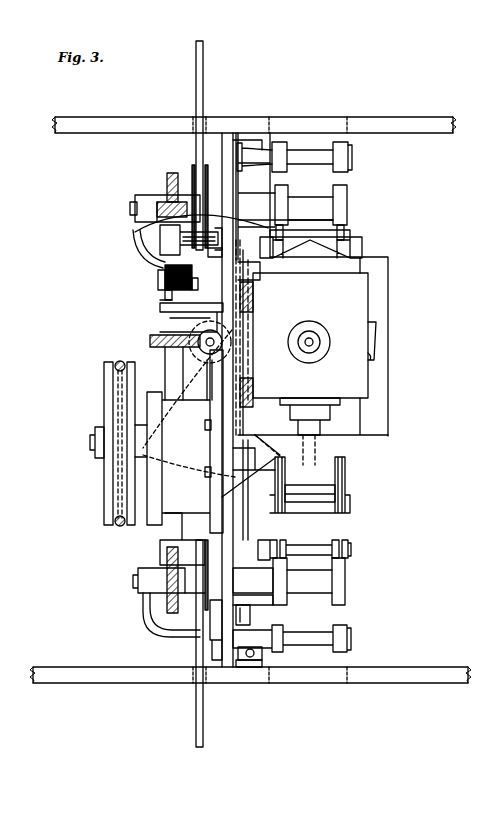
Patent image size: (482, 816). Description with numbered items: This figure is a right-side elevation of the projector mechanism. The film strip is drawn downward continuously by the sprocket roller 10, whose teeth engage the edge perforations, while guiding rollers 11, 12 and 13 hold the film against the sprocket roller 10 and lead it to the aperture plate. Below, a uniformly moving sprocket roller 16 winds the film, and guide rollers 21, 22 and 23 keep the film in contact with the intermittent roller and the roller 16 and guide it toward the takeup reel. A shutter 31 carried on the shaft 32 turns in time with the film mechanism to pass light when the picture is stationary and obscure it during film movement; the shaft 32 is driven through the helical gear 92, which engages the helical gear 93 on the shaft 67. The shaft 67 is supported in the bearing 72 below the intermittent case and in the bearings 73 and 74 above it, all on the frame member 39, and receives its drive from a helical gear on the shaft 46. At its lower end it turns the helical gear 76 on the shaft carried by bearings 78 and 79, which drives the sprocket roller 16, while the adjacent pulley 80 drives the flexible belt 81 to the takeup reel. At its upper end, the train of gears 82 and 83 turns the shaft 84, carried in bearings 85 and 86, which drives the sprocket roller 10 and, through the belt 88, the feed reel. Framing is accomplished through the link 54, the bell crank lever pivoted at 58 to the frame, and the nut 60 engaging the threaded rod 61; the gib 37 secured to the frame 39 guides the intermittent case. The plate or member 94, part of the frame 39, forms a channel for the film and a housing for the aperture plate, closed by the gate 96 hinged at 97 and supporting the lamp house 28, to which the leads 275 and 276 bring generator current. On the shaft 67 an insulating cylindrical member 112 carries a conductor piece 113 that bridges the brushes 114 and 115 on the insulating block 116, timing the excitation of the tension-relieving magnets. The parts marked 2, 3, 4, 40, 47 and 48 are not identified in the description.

The upper plate 2 is at (318, 76).
The lower plate 3 is at (250, 706).
The drive unit 4 is at (413, 493).
The sprocket roller 10 is at (345, 202).
The guiding roller 11 is at (350, 151).
The guiding roller 12 is at (350, 229).
The guiding roller 13 is at (352, 249).
The uniformly moving sprocket roller 16 is at (340, 587).
The guide roller 21 is at (312, 514).
The guide roller 22 is at (298, 549).
The guide roller 23 is at (298, 635).
The lamp house 28 is at (352, 305).
The shutter 31 is at (133, 238).
The shaft 32 is at (237, 339).
The gib 37 is at (213, 457).
The machine frame 39 is at (225, 496).
The upper tab 40 is at (205, 428).
The shaft 46 is at (90, 444).
The wheel 47 is at (104, 499).
The rim pins 48 is at (120, 526).
The link 54 is at (250, 533).
The pivot 58 is at (250, 622).
The block or nut 60 is at (262, 656).
The rod 61 is at (250, 664).
The shaft 67 is at (172, 369).
The bearing 72 is at (160, 546).
The bearing 73 is at (160, 324).
The bearing 74 is at (165, 241).
The helical gear 76 is at (165, 561).
The bearing 78 is at (140, 601).
The bearing 79 is at (253, 586).
The pulley 80 is at (190, 613).
The flexible belt 81 is at (196, 719).
The gear 82 is at (160, 208).
The gear 83 is at (173, 173).
The shaft 84 is at (132, 210).
The bearing 85 is at (146, 197).
The bearing 86 is at (248, 214).
The belt 88 is at (196, 92).
The helical gear 92 is at (206, 353).
The helical gear 93 is at (150, 346).
The plate or member 94 is at (388, 276).
The gate 96 is at (350, 419).
The hinge 97 is at (253, 293).
The insulating cylindrical member 112 is at (165, 298).
The conductor piece 113 is at (165, 281).
The brush 114 is at (198, 289).
The brush 115 is at (198, 262).
The insulating block 116 is at (222, 268).
The lead 275 is at (302, 453).
The lead 276 is at (310, 487).